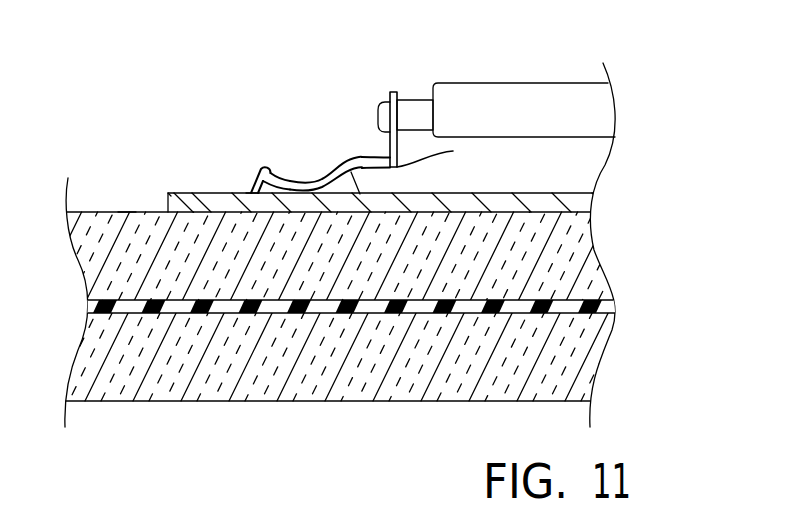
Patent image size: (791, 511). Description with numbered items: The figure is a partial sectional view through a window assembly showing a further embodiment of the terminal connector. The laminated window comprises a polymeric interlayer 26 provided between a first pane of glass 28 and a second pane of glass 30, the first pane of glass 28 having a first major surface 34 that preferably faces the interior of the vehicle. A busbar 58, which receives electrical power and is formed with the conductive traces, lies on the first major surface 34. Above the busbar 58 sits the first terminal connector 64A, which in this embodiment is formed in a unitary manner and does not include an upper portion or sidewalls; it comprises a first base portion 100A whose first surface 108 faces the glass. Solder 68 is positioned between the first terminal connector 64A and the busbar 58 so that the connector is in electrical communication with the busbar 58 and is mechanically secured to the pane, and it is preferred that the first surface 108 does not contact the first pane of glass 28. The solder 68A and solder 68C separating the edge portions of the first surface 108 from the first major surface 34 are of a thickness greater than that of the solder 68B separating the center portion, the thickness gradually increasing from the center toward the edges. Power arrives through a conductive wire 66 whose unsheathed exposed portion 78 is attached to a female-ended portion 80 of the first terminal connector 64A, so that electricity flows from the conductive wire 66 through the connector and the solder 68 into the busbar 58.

The polymeric interlayer 26 is at (607, 307).
The first pane of glass 28 is at (578, 253).
The second pane of glass 30 is at (583, 367).
The first major surface 34 is at (127, 212).
The busbar 58 is at (583, 203).
The first terminal connector 64A is at (453, 151).
The conductive wire 66 is at (525, 83).
The solder 68 is at (330, 144).
The solder 68A is at (258, 191).
The solder 68B is at (317, 194).
The solder 68C is at (352, 194).
The exposed portion 78 is at (419, 100).
The female-ended portion 80 is at (394, 92).
The first base portion 100A is at (289, 190).
The first surface 108 is at (250, 193).